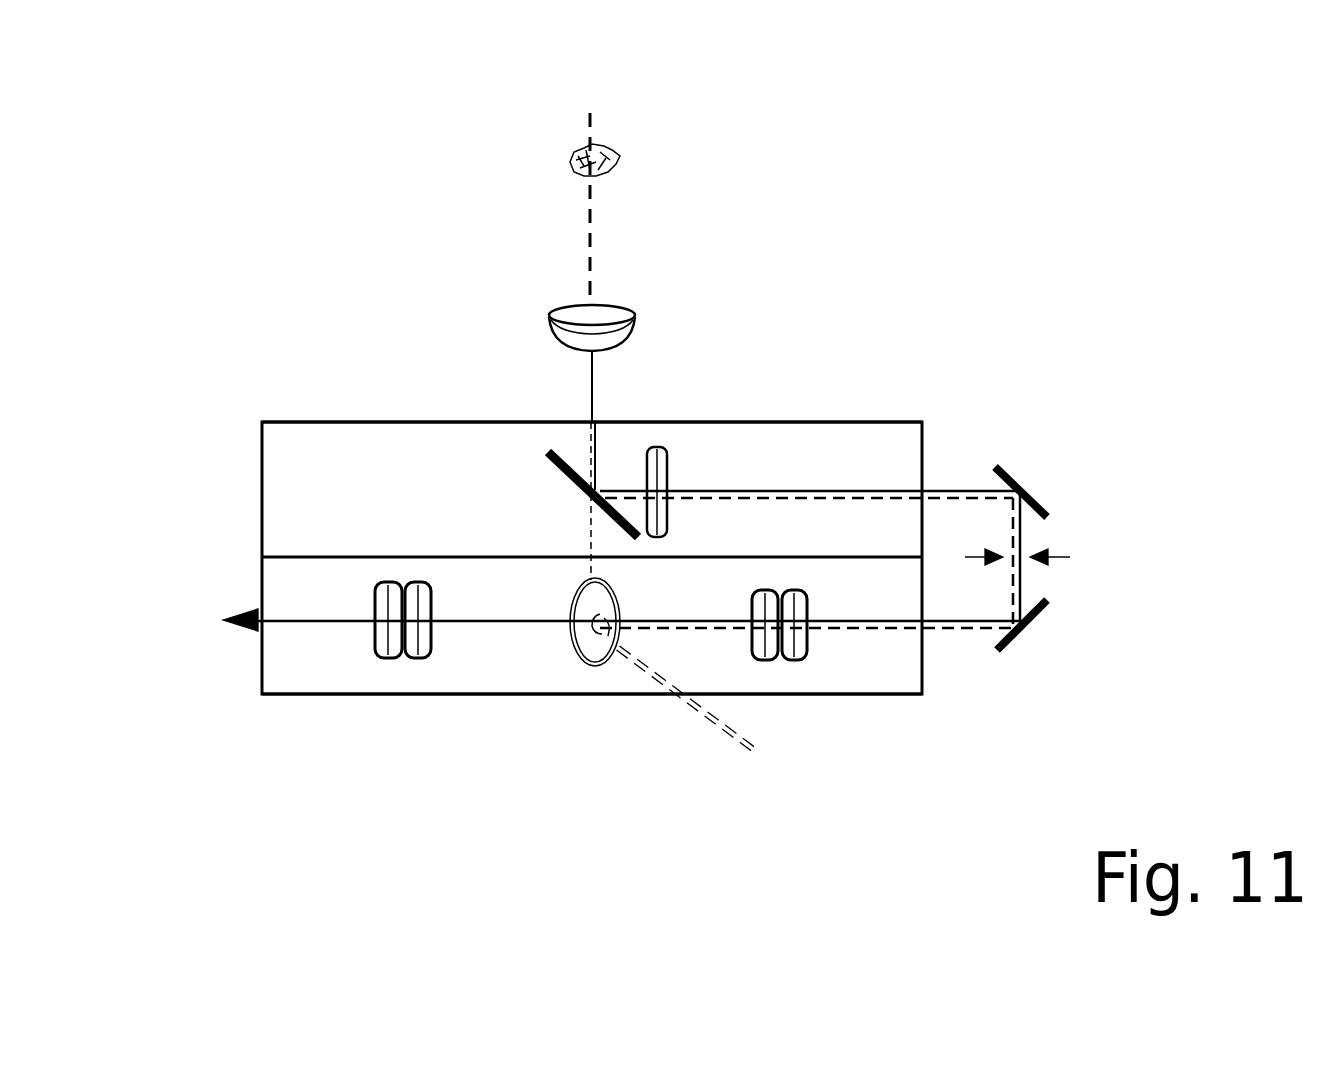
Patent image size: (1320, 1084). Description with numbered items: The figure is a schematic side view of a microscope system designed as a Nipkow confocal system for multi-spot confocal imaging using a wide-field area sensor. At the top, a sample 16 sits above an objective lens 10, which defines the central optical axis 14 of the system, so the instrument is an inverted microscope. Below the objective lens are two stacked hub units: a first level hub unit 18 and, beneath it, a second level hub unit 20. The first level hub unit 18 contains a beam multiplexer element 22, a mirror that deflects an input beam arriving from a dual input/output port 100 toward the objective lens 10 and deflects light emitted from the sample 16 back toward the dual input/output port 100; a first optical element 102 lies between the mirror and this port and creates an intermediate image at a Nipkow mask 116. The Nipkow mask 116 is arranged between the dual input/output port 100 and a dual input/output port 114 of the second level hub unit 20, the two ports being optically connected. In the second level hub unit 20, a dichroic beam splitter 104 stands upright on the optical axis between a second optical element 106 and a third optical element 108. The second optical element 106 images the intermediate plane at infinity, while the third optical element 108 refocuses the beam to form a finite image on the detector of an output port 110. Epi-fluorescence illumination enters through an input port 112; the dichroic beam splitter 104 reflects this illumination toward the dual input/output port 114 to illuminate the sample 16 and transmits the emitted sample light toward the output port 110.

The objective lens 10 is at (637, 317).
The central optical axis 14 is at (676, 196).
The sample 16 is at (620, 158).
The first level hub unit 18 is at (330, 472).
The second level hub unit 20 is at (330, 585).
The beam multiplexer element 22 is at (580, 486).
The dual input/output port 100 is at (950, 490).
The first optical element 102 is at (667, 478).
The dichroic beam splitter 104 is at (592, 655).
The second optical element 106 is at (785, 663).
The third optical element 108 is at (403, 655).
The output port 110 is at (340, 620).
The input port 112 is at (720, 730).
The dual input/output port 114 is at (955, 628).
The Nipkow mask 116 is at (1070, 552).